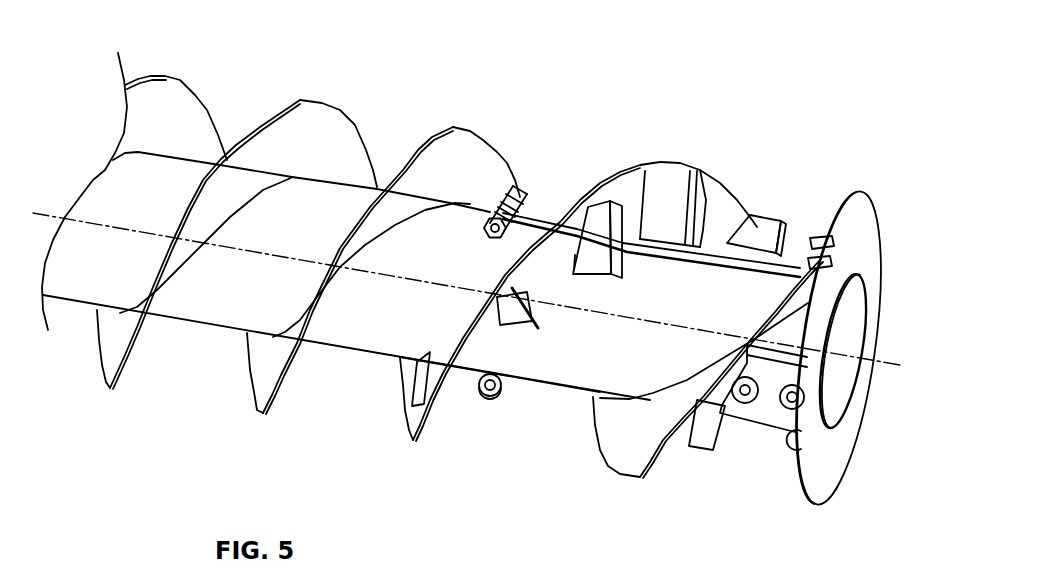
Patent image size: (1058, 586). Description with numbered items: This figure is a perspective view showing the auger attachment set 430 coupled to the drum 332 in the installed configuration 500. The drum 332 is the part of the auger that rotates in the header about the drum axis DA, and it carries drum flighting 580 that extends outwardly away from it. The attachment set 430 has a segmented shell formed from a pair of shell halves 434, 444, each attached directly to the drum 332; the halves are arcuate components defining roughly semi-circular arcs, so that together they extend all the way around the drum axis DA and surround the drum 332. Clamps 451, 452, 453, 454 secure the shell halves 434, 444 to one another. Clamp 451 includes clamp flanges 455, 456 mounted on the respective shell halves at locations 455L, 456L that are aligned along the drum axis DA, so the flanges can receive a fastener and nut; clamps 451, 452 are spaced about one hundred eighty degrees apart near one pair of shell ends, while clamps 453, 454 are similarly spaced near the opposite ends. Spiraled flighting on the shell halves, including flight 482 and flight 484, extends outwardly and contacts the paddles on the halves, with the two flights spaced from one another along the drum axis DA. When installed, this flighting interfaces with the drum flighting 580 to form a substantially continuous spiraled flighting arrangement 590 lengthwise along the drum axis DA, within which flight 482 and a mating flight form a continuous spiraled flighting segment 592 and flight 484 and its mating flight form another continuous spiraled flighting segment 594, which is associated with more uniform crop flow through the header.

The drum 332 is at (346, 210).
The drum flighting 580 is at (432, 256).
The clamp 451 is at (495, 137).
The clamp flange 455 is at (523, 181).
The location 455L is at (440, 329).
The clamp flange 456 is at (534, 155).
The location 456L is at (555, 173).
The spiraled flighting segment 592 is at (686, 166).
The shell half 444 is at (744, 192).
The auger attachment set 430 is at (658, 208).
The installed configuration 500 is at (687, 265).
The clamp 453 is at (857, 333).
The spiraled flighting segment 594 is at (862, 377).
The clamp 454 is at (772, 481).
The flight 484 is at (691, 460).
The shell half 434 is at (500, 410).
The flight 482 is at (536, 330).
The clamp 452 is at (474, 418).
The spiraled flighting arrangement 590 is at (390, 430).
The drum axis DA is at (466, 308).